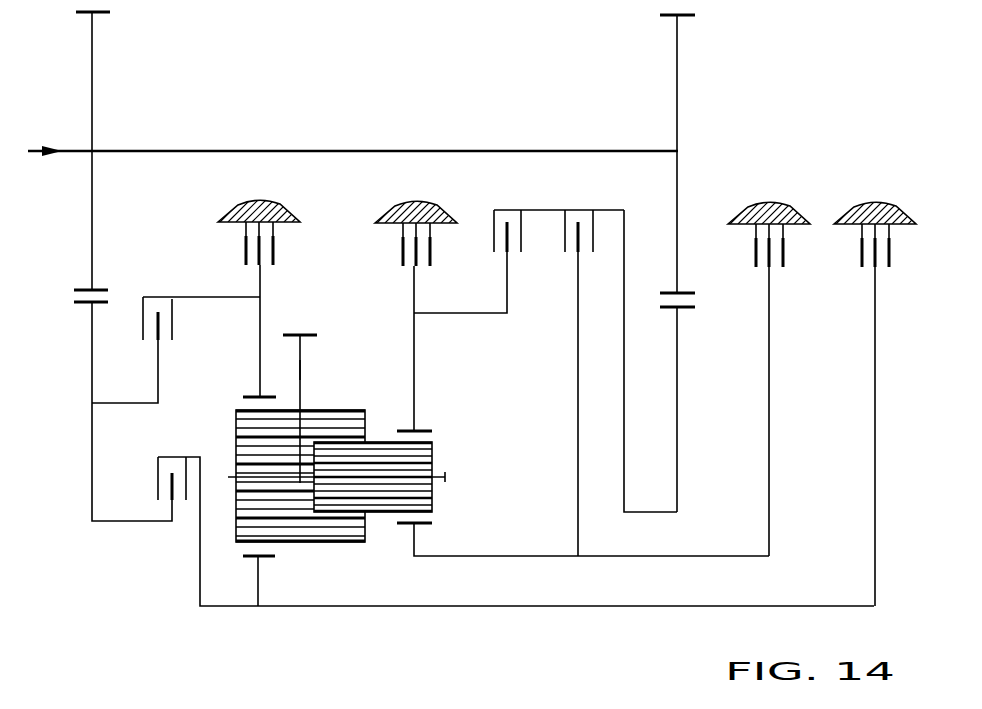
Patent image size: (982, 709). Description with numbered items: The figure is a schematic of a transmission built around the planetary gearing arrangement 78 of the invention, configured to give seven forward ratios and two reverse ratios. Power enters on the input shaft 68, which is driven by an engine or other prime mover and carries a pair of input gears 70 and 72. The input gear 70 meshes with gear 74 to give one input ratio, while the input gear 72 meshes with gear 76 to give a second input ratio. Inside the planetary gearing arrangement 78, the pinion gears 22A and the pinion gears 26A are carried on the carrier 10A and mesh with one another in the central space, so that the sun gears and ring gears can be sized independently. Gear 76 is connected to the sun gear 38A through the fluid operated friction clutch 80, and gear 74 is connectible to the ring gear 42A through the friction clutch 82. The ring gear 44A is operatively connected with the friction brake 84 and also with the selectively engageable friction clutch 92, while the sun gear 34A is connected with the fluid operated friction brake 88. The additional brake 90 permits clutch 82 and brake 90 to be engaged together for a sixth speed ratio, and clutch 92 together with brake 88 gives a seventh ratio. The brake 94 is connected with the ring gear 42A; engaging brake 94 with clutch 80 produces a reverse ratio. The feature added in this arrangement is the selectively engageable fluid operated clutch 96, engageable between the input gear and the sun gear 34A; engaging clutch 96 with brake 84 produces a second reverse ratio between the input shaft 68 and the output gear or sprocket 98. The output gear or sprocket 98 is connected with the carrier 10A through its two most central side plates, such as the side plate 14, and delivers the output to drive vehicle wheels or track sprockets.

The carrier 10A is at (222, 425).
The side plate 14 is at (300, 368).
The pinion gear 22A is at (294, 527).
The pinion gear 26A is at (430, 460).
The sun gear 34A is at (260, 578).
The sun gear 38A is at (418, 540).
The ring gear 42A is at (250, 397).
The ring gear 44A is at (422, 428).
The input shaft 68 is at (73, 148).
The input gear 70 is at (92, 262).
The input gear 72 is at (680, 185).
The gear 74 is at (92, 347).
The gear 76 is at (678, 416).
The planetary gearing arrangement 78 is at (366, 388).
The friction clutch 80 is at (587, 215).
The friction clutch 82 is at (150, 310).
The friction brake 84 is at (408, 222).
The friction brake 88 is at (870, 228).
The brake 90 is at (763, 228).
The friction clutch 92 is at (512, 218).
The brake 94 is at (250, 218).
The clutch 96 is at (165, 497).
The output gear or sprocket 98 is at (290, 330).